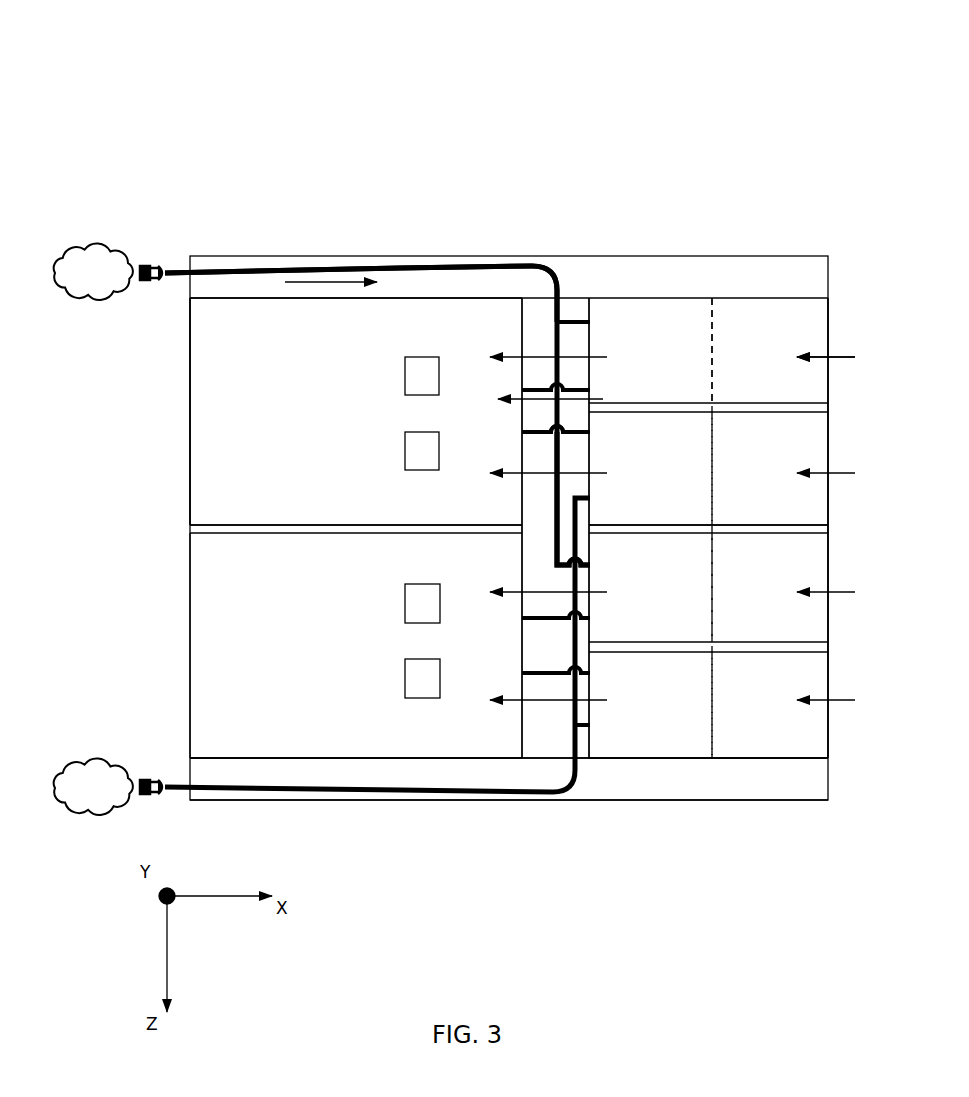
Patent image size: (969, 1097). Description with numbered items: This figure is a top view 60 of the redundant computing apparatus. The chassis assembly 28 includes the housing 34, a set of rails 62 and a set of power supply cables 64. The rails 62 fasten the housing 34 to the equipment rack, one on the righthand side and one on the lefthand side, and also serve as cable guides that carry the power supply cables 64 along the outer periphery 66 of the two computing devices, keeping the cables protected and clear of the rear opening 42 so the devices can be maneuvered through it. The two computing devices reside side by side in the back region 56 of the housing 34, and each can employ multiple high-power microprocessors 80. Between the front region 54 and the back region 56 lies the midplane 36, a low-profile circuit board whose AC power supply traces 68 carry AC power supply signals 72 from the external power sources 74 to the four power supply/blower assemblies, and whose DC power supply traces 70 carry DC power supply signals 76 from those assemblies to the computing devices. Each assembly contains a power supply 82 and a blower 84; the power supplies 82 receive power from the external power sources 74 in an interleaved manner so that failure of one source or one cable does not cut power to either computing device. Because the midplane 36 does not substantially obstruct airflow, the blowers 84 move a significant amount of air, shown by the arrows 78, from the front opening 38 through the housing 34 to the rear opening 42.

The top view 60 is at (147, 62).
The set of rails 62 is at (245, 192).
The set of power supply cables 64 is at (338, 198).
The set of external power sources 74 is at (88, 232).
The chassis assembly 28 is at (473, 192).
The housing 34 is at (478, 298).
The midplane 36 is at (540, 315).
The power supply 82 is at (654, 292).
The blower 84 is at (773, 292).
The set of AC power supply signals 72 is at (333, 290).
The outer periphery 66 is at (178, 318).
The rear opening 42 is at (178, 550).
The microprocessors 80 is at (403, 377).
The set of DC power supply traces 70 is at (600, 357).
The set of DC power supply signals 76 is at (597, 400).
The set of AC power supply traces 68 is at (553, 543).
The arrows 78 is at (837, 358).
The front opening 38 is at (842, 558).
The back region 56 is at (450, 773).
The front region 54 is at (735, 778).